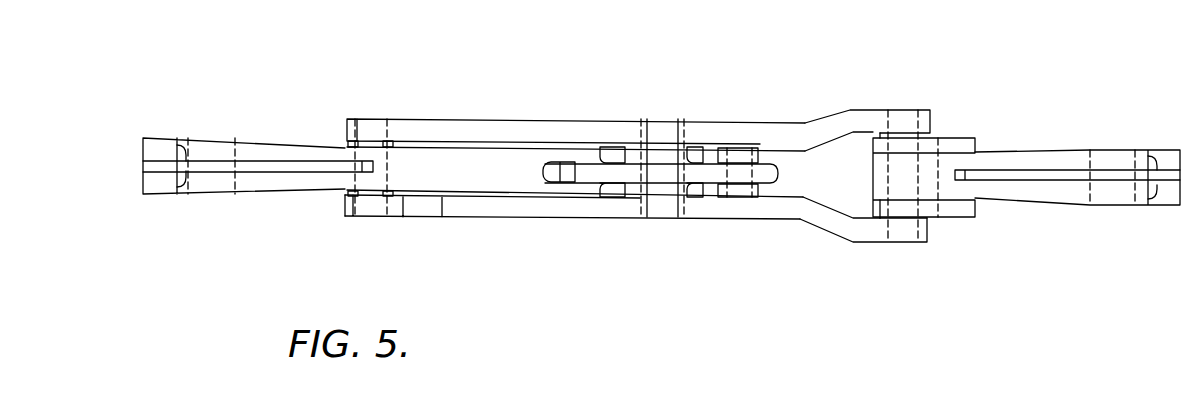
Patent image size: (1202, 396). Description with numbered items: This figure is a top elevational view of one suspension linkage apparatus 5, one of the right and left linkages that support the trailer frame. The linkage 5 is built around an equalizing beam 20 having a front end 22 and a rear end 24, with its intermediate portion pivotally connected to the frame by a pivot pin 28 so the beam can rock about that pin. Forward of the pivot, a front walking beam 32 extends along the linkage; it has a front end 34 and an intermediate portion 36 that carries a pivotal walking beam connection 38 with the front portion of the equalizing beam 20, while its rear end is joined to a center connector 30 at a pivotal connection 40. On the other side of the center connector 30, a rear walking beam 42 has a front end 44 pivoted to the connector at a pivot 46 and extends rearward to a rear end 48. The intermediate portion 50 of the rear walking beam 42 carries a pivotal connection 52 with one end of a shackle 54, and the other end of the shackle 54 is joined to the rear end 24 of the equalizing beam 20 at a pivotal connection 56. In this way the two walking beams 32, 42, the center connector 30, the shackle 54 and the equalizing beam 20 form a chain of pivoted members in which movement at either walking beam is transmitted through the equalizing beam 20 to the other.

The suspension linkage apparatus 5 is at (492, 212).
The equalizing beam 20 is at (700, 120).
The front end 22 is at (430, 120).
The rear end 24 is at (840, 225).
The pivot pin 28 is at (620, 115).
The center connector 30 is at (780, 173).
The front walking beam 32 is at (248, 133).
The front end 34 is at (166, 192).
The intermediate portion 36 is at (292, 187).
The pivotal walking beam connection 38 is at (380, 120).
The pivotal connection 40 is at (548, 120).
The rear walking beam 42 is at (1157, 149).
The front end 44 is at (715, 185).
The pivot 46 is at (722, 148).
The rear end 48 is at (1158, 192).
The intermediate portion 50 is at (800, 152).
The pivotal connection 52 is at (960, 218).
The shackle 54 is at (952, 135).
The pivotal connection 56 is at (887, 228).